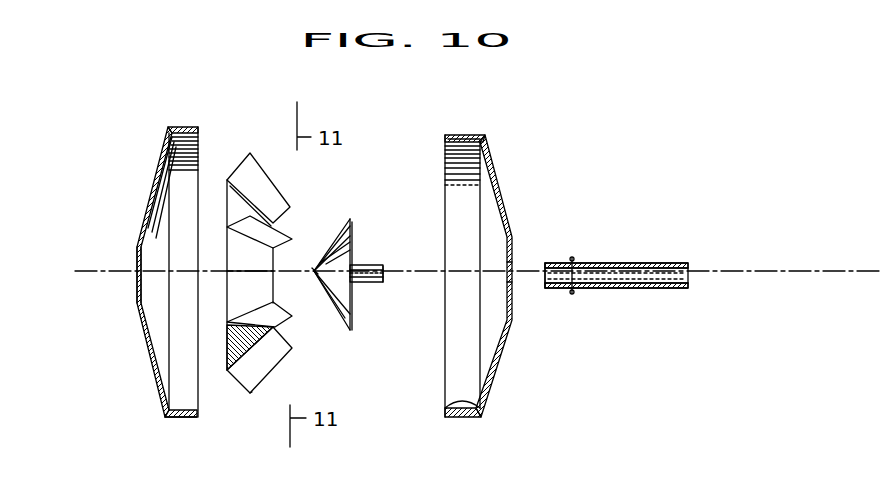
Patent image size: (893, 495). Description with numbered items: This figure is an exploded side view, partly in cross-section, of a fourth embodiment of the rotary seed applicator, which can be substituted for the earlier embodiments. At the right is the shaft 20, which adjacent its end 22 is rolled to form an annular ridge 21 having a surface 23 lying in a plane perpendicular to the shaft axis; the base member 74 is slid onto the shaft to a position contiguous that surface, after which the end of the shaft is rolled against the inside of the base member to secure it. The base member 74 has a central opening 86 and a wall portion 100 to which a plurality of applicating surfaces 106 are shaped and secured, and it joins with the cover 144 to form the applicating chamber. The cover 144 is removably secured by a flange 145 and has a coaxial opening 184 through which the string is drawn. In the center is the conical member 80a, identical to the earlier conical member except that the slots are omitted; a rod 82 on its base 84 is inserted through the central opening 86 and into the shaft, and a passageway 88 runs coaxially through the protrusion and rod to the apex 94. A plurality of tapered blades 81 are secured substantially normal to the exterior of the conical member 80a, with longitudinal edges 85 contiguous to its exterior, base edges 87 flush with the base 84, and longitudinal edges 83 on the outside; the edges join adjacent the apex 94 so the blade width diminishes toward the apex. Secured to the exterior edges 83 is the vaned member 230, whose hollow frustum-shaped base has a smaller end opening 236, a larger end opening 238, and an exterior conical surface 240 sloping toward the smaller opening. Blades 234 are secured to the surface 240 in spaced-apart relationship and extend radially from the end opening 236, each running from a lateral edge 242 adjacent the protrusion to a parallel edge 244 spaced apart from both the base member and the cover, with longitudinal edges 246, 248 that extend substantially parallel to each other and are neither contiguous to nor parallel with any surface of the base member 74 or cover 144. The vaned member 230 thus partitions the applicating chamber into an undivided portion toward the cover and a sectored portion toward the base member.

The shaft 20 is at (648, 290).
The annular ridge 21 is at (575, 290).
The end 22 is at (545, 280).
The surface 23 is at (571, 290).
The base member 74 is at (512, 228).
The conical member 80a is at (338, 240).
The tapered blades 81 is at (356, 222).
The rod 82 is at (380, 283).
The longitudinal edge 83 is at (345, 318).
The base 84 is at (354, 236).
The longitudinal edge 85 is at (352, 250).
The central opening 86 is at (513, 283).
The base edge 87 is at (353, 230).
The passageway 88 is at (386, 267).
The apex 94 is at (315, 276).
The wall portion 100 is at (486, 149).
The applicating surfaces 106 is at (445, 413).
The cover 144 is at (150, 357).
The flange 145 is at (190, 417).
The coaxial opening 184 is at (137, 265).
The vaned member 230 is at (248, 154).
The blades 234 is at (284, 219).
The end opening 236 is at (280, 254).
The end opening 238 is at (228, 298).
The exterior conical surface 240 is at (273, 289).
The lateral edge 242 is at (282, 320).
The edge 244 is at (250, 385).
The longitudinal edge 246 is at (228, 342).
The longitudinal edge 248 is at (282, 360).